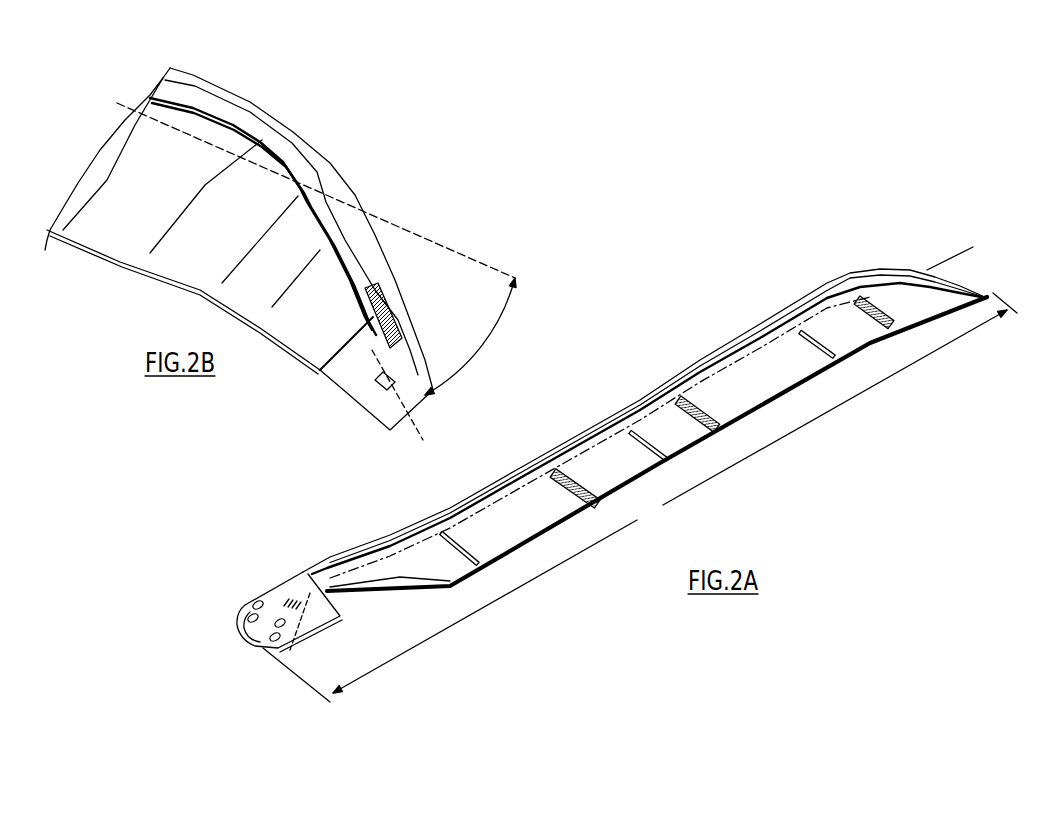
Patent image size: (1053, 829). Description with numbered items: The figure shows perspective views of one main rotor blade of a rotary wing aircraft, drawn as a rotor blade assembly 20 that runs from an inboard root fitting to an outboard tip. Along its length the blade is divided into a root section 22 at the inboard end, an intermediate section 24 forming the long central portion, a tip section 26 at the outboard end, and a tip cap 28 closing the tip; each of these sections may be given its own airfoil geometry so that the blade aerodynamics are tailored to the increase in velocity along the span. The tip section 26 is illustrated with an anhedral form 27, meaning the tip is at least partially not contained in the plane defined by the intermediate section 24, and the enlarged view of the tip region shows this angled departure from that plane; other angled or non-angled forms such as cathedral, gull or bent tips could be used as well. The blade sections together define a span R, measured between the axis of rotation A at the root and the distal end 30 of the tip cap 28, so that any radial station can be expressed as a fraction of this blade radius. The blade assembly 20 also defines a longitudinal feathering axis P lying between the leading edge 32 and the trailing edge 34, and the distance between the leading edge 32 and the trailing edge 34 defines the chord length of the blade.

In FIG. 2A, the rotor blade assembly 20 is at (640, 497).
In FIG. 2A, the root section 22 is at (289, 596).
In FIG. 2A, the intermediate section 24 is at (588, 418).
In FIG. 2A, the tip section 26 is at (843, 273).
In FIG. 2B, the anhedral form 27 is at (410, 198).
In FIG. 2B, the tip cap 28 is at (424, 323).
In FIG. 2A, the tip cap 28 is at (955, 281).
In FIG. 2B, the distal end 30 is at (406, 393).
In FIG. 2A, the distal end 30 is at (996, 276).
In FIG. 2A, the leading edge 32 is at (645, 423).
In FIG. 2A, the trailing edge 34 is at (693, 447).
In FIG. 2B, the longitudinal feathering axis P is at (463, 259).
In FIG. 2A, the longitudinal feathering axis P is at (942, 262).
In FIG. 2A, the span R is at (566, 345).
In FIG. 2A, the axis of rotation A is at (314, 624).